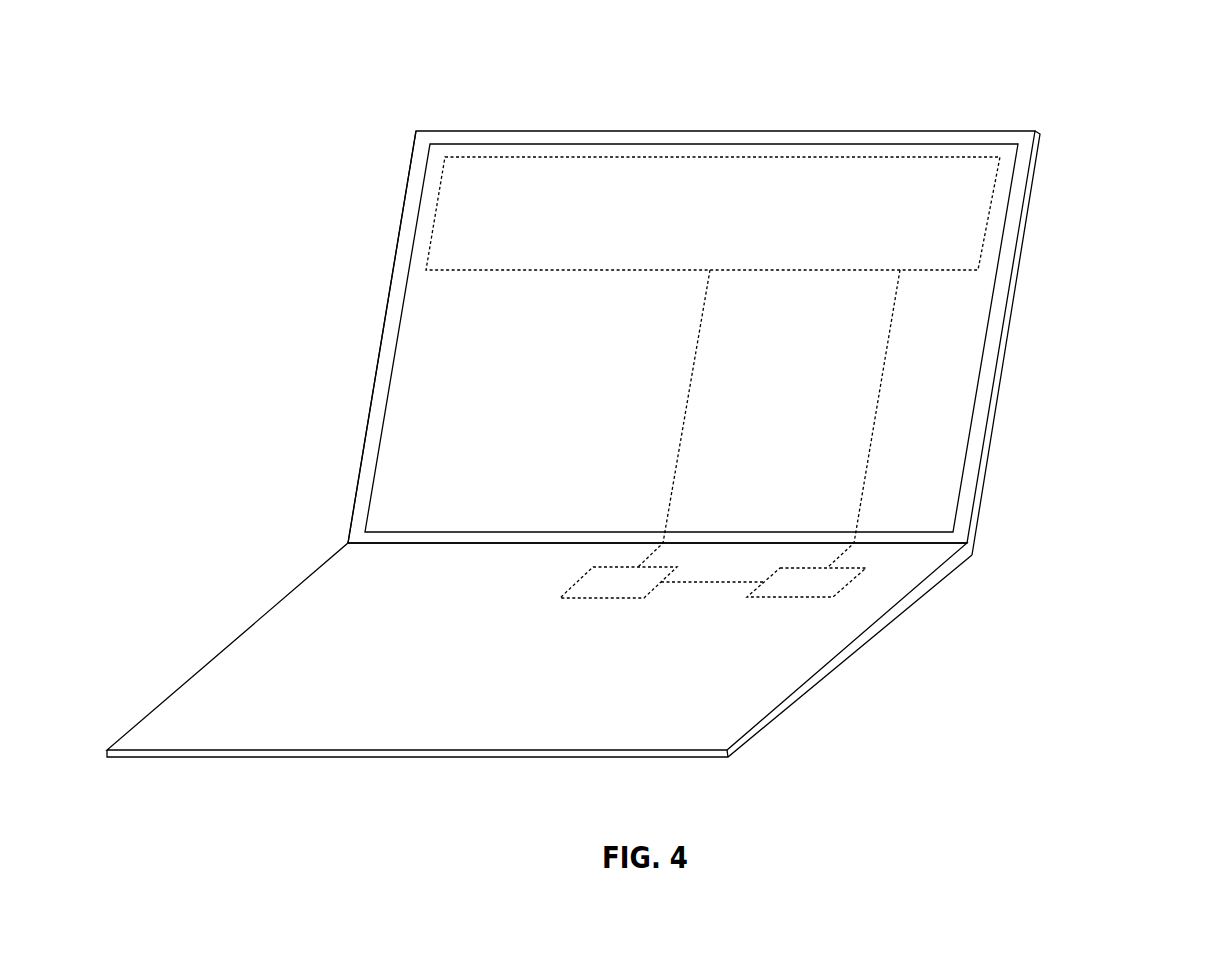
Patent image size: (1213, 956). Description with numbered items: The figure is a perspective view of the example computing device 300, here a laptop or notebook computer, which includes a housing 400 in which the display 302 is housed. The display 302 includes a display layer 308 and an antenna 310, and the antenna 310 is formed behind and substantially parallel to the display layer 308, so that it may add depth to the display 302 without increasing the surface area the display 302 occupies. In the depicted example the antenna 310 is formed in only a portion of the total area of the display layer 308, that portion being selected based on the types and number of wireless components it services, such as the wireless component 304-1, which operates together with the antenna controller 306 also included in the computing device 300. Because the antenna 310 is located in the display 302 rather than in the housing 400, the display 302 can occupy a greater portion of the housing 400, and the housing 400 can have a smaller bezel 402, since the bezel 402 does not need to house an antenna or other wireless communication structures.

The computing device 300 is at (1140, 238).
The display 302 is at (760, 135).
The wireless component 304-1 is at (647, 592).
The antenna controller 306 is at (851, 583).
The display layer 308 is at (638, 145).
The antenna 310 is at (517, 156).
The housing 400 is at (393, 269).
The bezel 402 is at (413, 168).